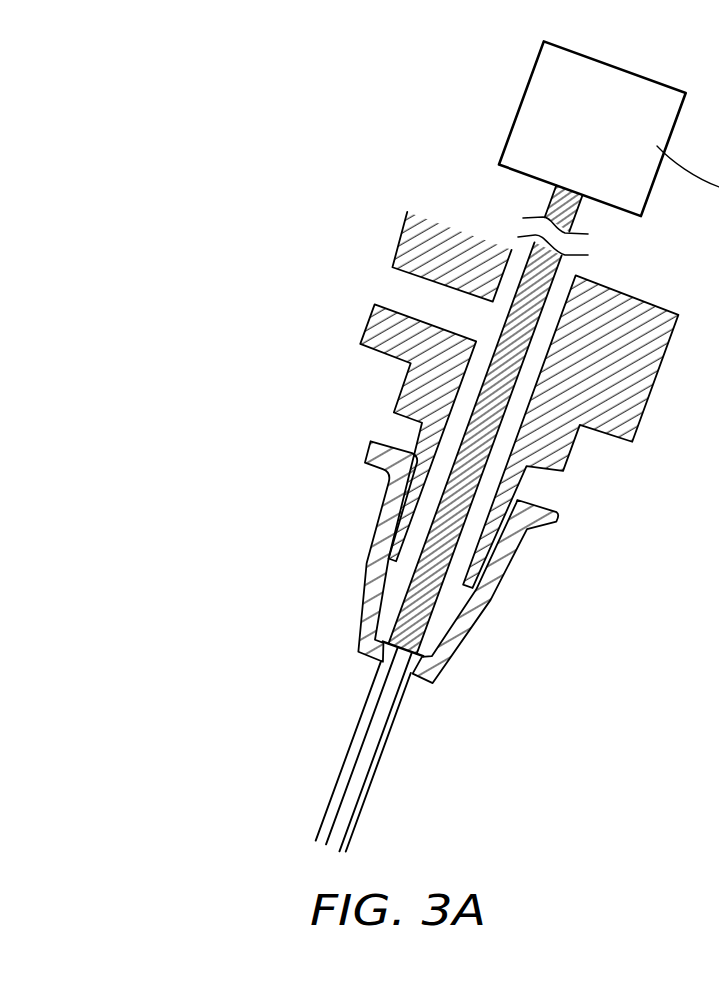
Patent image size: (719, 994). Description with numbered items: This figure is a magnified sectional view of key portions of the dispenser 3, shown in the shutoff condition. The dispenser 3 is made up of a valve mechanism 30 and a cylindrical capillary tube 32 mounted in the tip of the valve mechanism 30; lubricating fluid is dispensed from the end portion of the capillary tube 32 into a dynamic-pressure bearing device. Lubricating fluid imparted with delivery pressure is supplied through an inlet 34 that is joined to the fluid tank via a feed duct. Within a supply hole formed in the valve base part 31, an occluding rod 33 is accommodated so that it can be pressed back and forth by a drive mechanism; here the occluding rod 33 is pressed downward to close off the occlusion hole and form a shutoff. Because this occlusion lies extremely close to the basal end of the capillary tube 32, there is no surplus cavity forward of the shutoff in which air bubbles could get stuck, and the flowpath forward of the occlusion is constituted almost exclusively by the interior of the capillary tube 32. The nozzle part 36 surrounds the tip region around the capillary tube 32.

The dispenser 3 is at (395, 447).
The valve mechanism 30 is at (300, 502).
The valve base part 31 is at (581, 444).
The cylindrical capillary tube 32 is at (328, 742).
The occluding rod 33 is at (437, 617).
The inlet 34 is at (395, 288).
The nozzle 36 is at (506, 576).